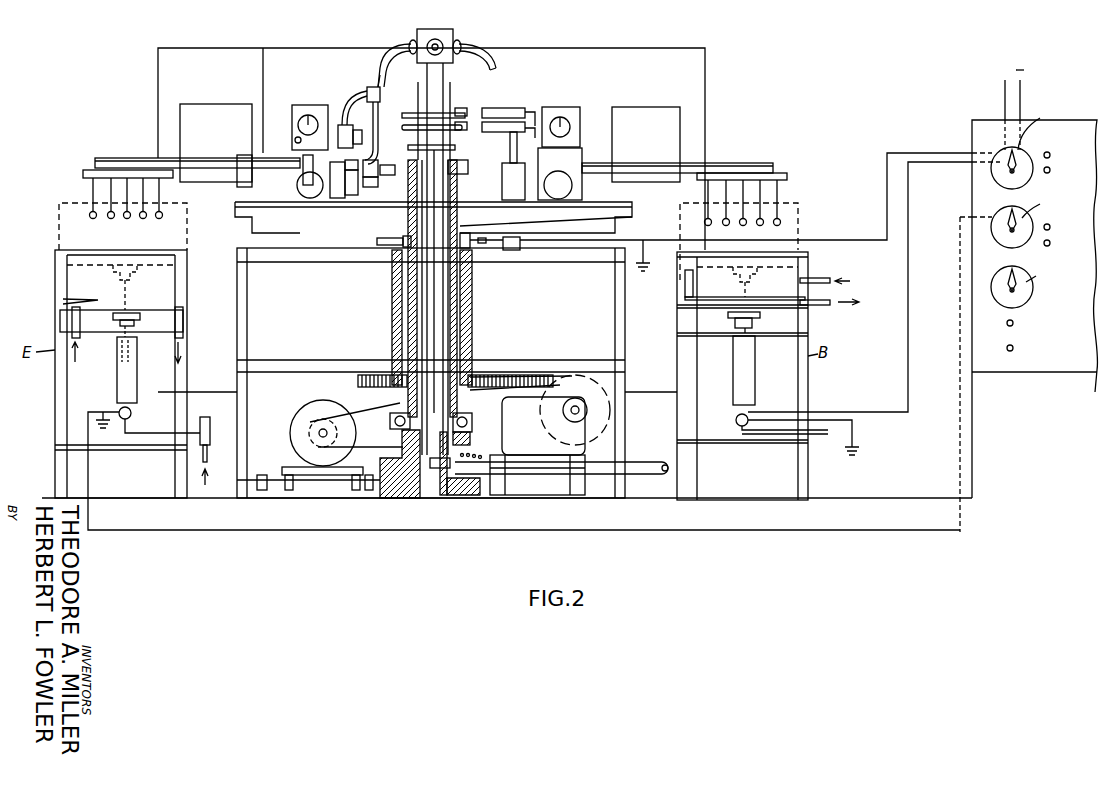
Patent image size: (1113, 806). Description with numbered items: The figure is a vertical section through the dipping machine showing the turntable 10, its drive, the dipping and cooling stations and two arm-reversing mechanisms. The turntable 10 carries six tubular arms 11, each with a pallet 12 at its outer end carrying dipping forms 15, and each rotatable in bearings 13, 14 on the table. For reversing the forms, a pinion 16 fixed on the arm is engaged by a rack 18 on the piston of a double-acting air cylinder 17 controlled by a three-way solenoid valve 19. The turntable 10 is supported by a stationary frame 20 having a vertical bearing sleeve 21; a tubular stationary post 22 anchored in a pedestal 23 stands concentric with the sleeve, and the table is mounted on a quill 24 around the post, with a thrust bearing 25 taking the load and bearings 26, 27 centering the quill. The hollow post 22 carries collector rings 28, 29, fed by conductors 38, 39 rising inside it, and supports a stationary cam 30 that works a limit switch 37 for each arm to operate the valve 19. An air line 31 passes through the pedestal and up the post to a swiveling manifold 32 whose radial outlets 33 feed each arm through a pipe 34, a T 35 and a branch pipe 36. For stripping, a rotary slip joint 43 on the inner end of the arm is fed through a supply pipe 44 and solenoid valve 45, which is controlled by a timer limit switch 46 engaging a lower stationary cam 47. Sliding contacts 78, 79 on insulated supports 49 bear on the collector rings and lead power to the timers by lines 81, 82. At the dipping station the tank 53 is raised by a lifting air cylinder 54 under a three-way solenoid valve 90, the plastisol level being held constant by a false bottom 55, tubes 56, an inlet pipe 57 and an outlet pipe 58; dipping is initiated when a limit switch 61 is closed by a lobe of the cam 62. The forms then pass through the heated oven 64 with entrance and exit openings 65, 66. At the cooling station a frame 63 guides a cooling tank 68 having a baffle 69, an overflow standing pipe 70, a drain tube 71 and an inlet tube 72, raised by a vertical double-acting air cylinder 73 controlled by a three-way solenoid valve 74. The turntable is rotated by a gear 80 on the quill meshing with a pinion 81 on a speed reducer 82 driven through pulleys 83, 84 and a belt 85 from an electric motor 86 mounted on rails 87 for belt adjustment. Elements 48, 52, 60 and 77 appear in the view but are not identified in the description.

The turntable 10 is at (622, 216).
The arm 11 is at (125, 158).
The pallet 12 is at (83, 174).
The bearing 13 is at (243, 155).
The bearing 14 is at (350, 180).
The dipping forms 15 is at (93, 219).
The pinion 16 is at (304, 160).
The double-acting air pressure cylinder 17 is at (336, 196).
The rack 18 is at (298, 187).
The three-way solenoid operated valve 19 is at (344, 125).
The stationary frame 20 is at (298, 266).
The vertical bearing sleeve 21 is at (392, 298).
The tubular stationary post 22 is at (450, 296).
The pedestal 23 is at (400, 486).
The quill 24 is at (462, 322).
The thrust bearing 25 is at (470, 420).
The bearing 26 is at (388, 366).
The bearing 27 is at (396, 270).
The collector ring 28 is at (402, 126).
The collector ring 29 is at (410, 113).
The stationary cam 30 is at (456, 148).
The air line 31 is at (441, 78).
The swiveling manifold 32 is at (441, 30).
The radial outlet 33 is at (414, 40).
The pipe 34 is at (392, 45).
The T 35 is at (380, 88).
The branch pipe 36 is at (371, 77).
The limit switch 37 is at (378, 161).
The conductor 38 is at (461, 106).
The conductor 39 is at (462, 120).
The rotary slip joint 43 is at (368, 224).
The supply pipe 44 is at (362, 128).
The solenoid valve 45 is at (348, 226).
The timer limit switch 46 is at (370, 188).
The stationary cam 47 is at (390, 176).
The gauge 48 is at (296, 107).
The insulated support 49 is at (518, 108).
The station frame 52 is at (806, 390).
The tank 53 is at (790, 316).
The lifting air cylinder 54 is at (756, 364).
The false bottom 55 is at (760, 297).
The tube 56 is at (694, 284).
The inlet pipe 57 is at (820, 279).
The outlet pipe 58 is at (834, 300).
The power leads 60 is at (1018, 70).
The limit switch 61 is at (512, 252).
The cam 62 is at (478, 236).
The frame 63 is at (60, 386).
The heated oven 64 is at (706, 62).
The entrance opening 65 is at (681, 116).
The exit opening 66 is at (207, 104).
The cooling tank 68 is at (112, 326).
The baffle 69 is at (84, 298).
The overflow standing pipe 70 is at (184, 286).
The drain tube 71 is at (184, 318).
The inlet tube 72 is at (72, 320).
The vertical double-acting air cylinder 73 is at (118, 382).
The three-way solenoid operated valve 74 is at (119, 412).
The control panel 77 is at (1086, 122).
The sliding contact 78 is at (506, 108).
The sliding contact 79 is at (540, 120).
The gear 80 is at (498, 375).
The pinion 81 is at (536, 118).
The speed reducer 82 is at (536, 132).
The pulley 83 is at (345, 434).
The pulley 84 is at (600, 396).
The belt 85 is at (384, 410).
The electric motor 86 is at (304, 418).
The rails 87 is at (285, 474).
The three-way solenoid valve 90 is at (736, 424).